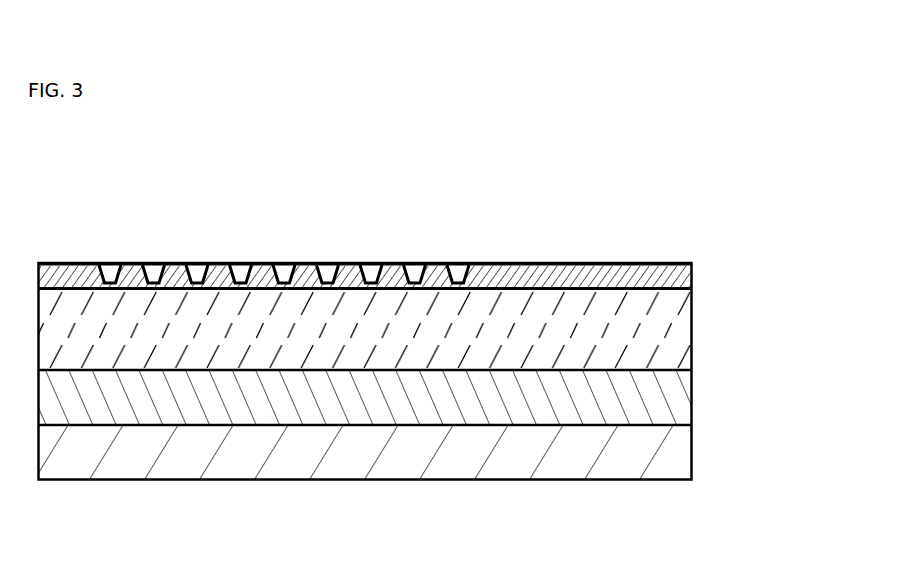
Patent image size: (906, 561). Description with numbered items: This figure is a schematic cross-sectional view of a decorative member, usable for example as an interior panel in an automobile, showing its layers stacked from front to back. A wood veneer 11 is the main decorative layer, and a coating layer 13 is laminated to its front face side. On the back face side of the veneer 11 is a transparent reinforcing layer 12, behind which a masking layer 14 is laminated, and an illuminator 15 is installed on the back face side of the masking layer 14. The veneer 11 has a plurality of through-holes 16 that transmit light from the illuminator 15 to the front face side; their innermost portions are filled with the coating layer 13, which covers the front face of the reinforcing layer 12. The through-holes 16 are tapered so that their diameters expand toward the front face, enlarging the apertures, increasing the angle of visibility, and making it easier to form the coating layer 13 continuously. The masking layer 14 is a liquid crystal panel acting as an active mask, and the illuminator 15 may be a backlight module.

The veneer 11 is at (694, 277).
The reinforcing layer 12 is at (693, 330).
The coating layer 13 is at (616, 263).
The masking layer 14 is at (693, 397).
The illuminator 15 is at (693, 453).
The through-holes 16 is at (112, 264).